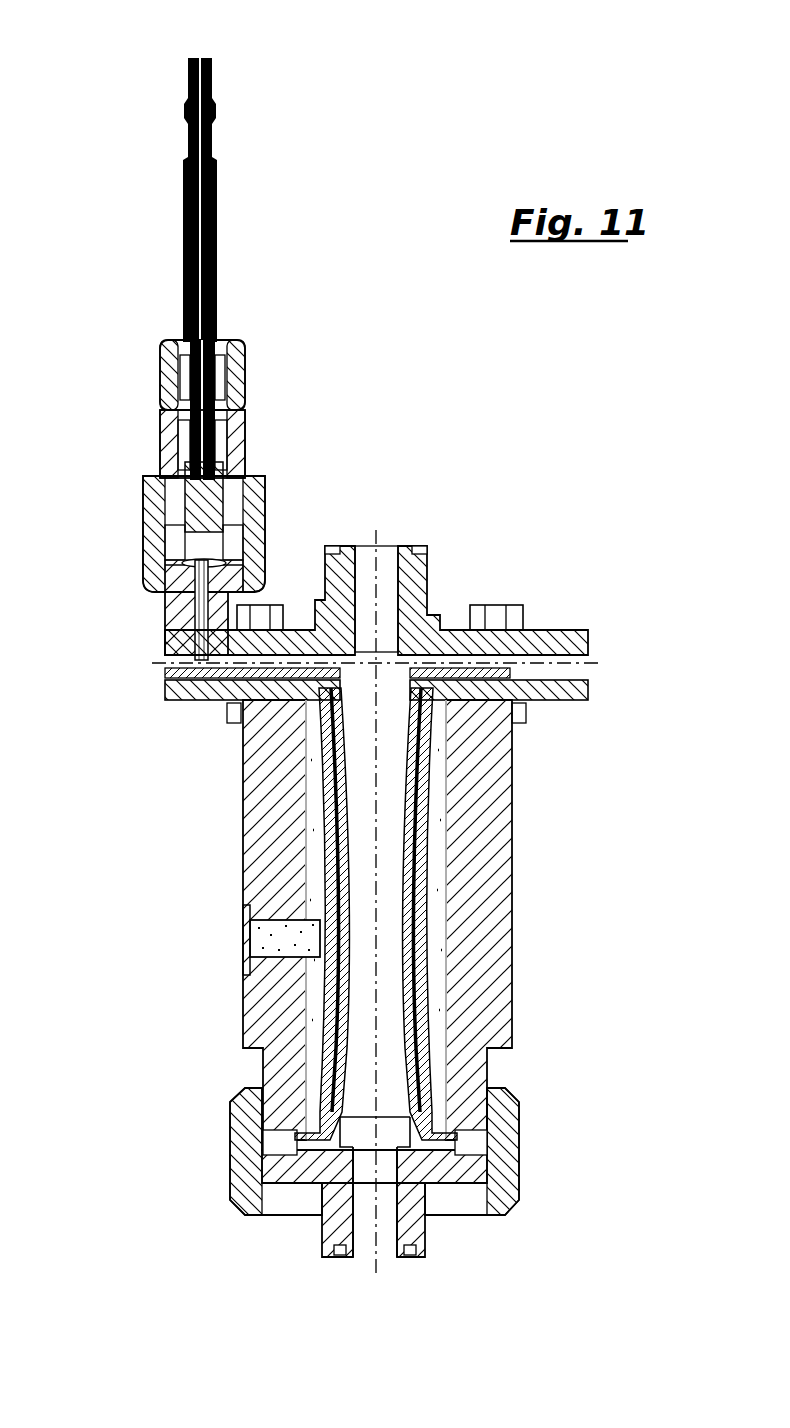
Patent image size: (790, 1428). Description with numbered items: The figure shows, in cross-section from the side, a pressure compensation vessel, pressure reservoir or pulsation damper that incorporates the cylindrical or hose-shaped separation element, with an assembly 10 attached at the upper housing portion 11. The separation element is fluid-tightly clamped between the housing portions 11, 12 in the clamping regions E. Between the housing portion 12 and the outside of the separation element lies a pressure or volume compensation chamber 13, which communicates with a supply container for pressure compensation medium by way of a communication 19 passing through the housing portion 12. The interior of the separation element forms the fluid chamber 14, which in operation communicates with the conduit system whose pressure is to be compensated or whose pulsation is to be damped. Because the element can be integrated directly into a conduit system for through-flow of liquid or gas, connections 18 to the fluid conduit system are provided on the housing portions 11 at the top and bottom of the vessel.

The connector with cable 10 is at (130, 470).
The housing portion 11 is at (555, 640).
The housing portion 12 is at (498, 805).
The pressure or volume compensation chamber 13 is at (428, 915).
The fluid chamber 14 is at (382, 1040).
The connections 18 is at (382, 572).
The communication 19 is at (255, 940).
The clamping regions E is at (594, 661).